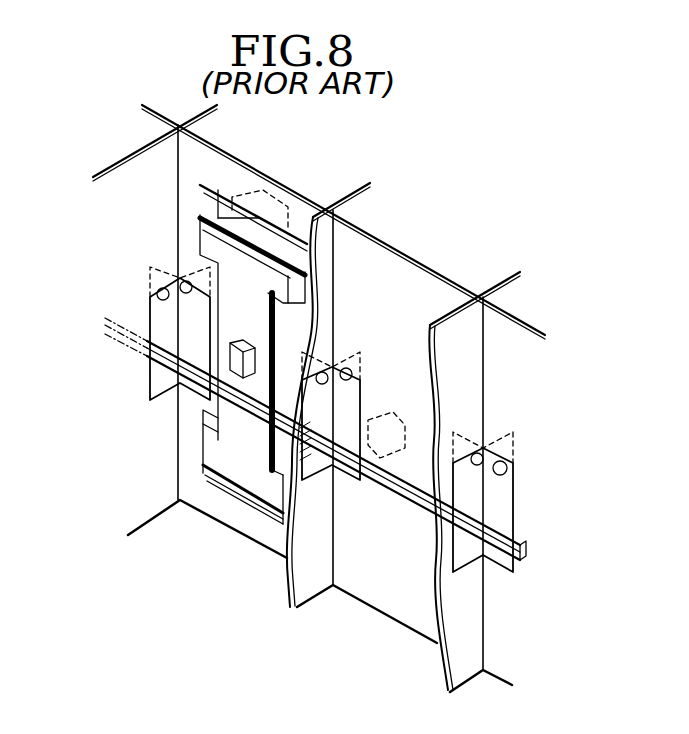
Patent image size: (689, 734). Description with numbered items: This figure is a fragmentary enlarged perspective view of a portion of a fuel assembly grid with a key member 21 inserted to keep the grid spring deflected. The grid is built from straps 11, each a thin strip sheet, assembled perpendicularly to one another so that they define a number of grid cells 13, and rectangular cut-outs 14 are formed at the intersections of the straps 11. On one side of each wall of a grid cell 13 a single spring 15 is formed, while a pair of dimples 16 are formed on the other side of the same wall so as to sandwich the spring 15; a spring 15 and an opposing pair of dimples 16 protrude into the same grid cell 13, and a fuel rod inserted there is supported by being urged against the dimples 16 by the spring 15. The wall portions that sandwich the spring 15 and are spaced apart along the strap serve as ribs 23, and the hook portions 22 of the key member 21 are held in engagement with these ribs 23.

The strap 11 is at (113, 167).
The grid cell 13 is at (183, 119).
The rectangular cut-out 14 is at (180, 278).
The spring 15 is at (238, 450).
The dimple 16 is at (276, 198).
The key member 21 is at (385, 488).
The hook portion 22 is at (148, 343).
The rib 23 is at (182, 405).